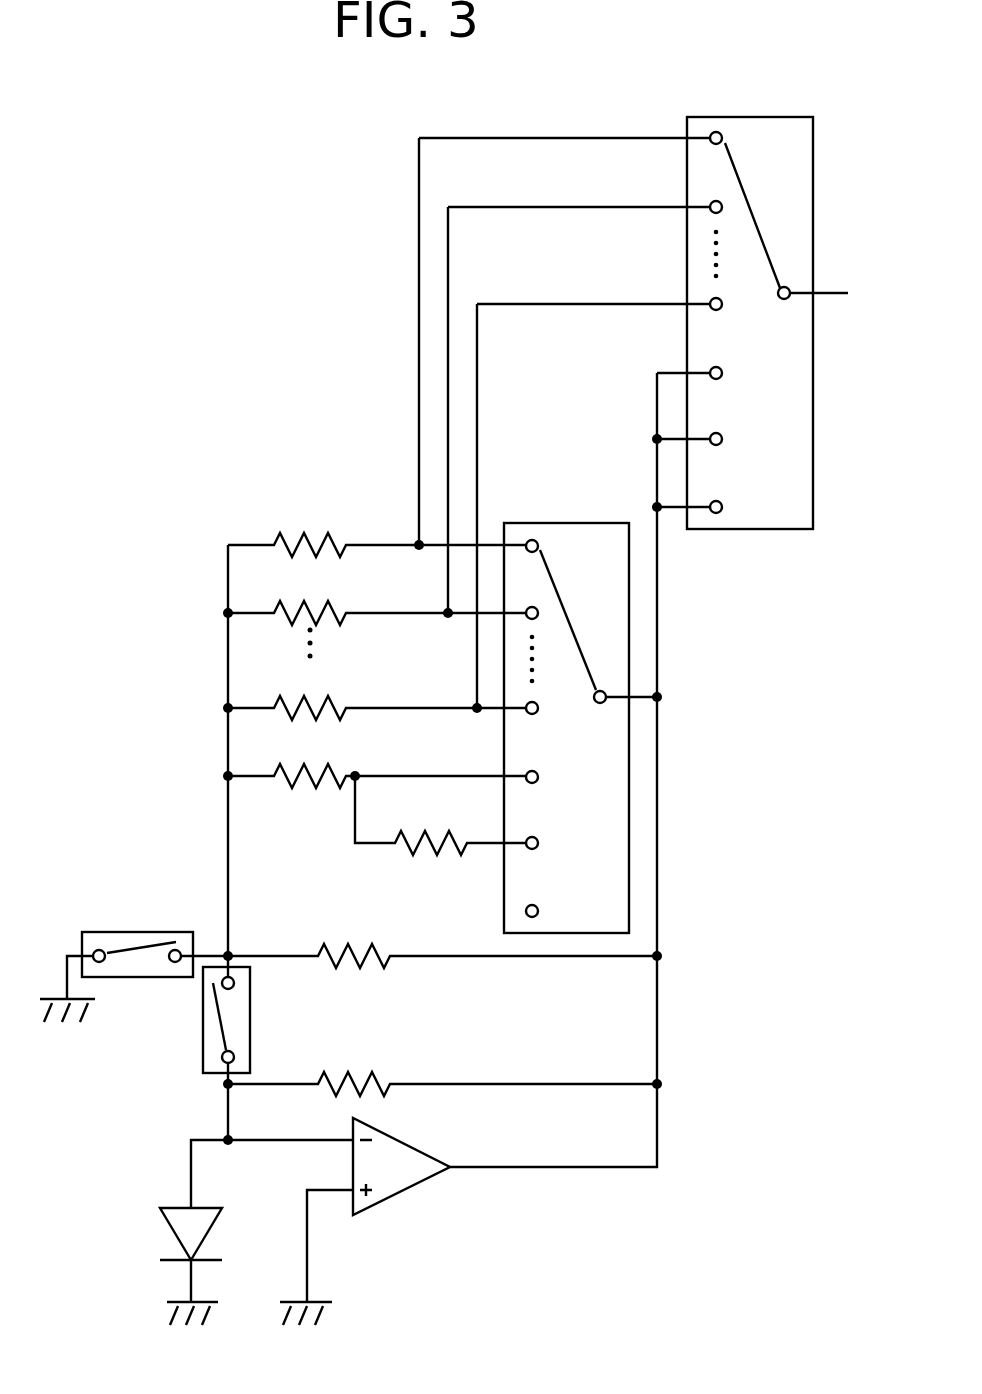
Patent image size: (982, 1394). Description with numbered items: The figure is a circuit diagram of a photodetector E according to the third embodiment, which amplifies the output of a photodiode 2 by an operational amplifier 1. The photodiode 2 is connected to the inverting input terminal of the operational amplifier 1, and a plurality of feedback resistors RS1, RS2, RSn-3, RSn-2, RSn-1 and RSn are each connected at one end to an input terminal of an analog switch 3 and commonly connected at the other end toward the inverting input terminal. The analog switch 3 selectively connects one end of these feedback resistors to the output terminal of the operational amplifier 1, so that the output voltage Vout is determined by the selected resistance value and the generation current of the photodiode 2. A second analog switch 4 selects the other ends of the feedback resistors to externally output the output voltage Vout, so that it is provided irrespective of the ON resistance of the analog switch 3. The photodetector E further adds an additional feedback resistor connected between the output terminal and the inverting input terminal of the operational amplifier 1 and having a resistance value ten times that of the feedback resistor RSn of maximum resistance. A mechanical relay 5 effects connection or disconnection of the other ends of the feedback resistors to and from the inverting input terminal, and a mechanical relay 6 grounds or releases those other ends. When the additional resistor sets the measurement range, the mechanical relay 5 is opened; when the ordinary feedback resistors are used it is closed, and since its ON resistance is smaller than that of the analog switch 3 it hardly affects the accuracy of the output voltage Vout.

The operational amplifier 1 is at (398, 1192).
The photodiode 2 is at (208, 1232).
The analog switch 3 is at (568, 523).
The second analog switch 4 is at (748, 530).
The mechanical relay 5 is at (203, 1018).
The mechanical relay 6 is at (138, 932).
The photodetector E is at (350, 326).
The feedback resistor RS1 is at (377, 527).
The feedback resistor RS2 is at (377, 595).
The feedback resistor RSn-3 is at (377, 693).
The feedback resistor RSn-2 is at (377, 760).
The feedback resistor RSn-1 is at (440, 815).
The feedback resistor RSn is at (442, 938).
The output voltage Vout is at (849, 275).